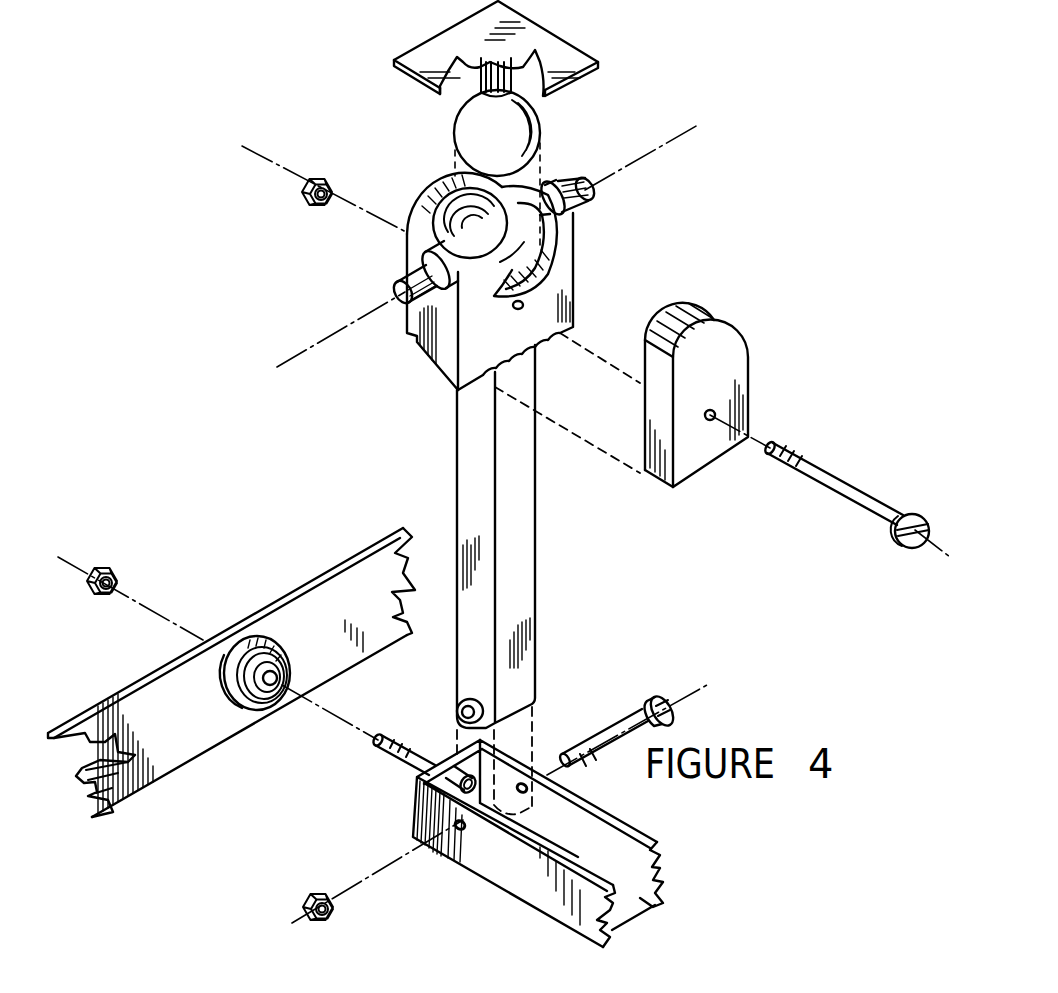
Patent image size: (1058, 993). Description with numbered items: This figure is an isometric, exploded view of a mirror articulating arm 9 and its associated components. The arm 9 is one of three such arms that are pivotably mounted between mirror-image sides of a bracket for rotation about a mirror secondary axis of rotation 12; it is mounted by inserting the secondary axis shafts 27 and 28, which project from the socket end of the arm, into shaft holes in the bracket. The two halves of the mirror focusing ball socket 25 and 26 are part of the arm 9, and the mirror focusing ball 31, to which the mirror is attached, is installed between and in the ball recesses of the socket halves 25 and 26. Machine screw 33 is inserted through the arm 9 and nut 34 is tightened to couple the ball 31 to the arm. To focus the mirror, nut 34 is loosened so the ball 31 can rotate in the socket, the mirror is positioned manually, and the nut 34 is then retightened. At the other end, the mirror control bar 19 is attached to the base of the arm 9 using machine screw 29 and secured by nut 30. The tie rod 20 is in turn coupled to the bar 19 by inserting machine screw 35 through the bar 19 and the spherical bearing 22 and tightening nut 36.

The mirror articulating arm 9 is at (536, 535).
The mirror secondary axis of rotation 12 is at (288, 358).
The mirror control bar 19 is at (503, 882).
The tie rod 20 is at (276, 682).
The spherical bearing 22 is at (293, 647).
The mirror focusing ball socket half 25 is at (408, 251).
The mirror focusing ball socket half 26 is at (749, 357).
The secondary axis shaft 27 is at (398, 292).
The secondary axis shaft 28 is at (586, 202).
The machine screw 29 is at (634, 730).
The nut 30 is at (334, 910).
The mirror focusing ball 31 is at (455, 132).
The machine screw 33 is at (856, 489).
The nut 34 is at (315, 206).
The machine screw 35 is at (410, 768).
The nut 36 is at (100, 597).